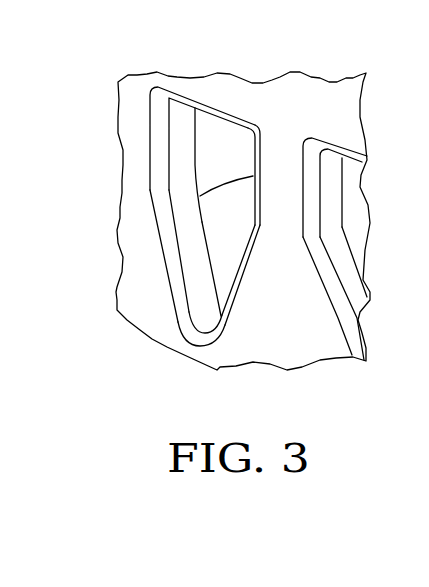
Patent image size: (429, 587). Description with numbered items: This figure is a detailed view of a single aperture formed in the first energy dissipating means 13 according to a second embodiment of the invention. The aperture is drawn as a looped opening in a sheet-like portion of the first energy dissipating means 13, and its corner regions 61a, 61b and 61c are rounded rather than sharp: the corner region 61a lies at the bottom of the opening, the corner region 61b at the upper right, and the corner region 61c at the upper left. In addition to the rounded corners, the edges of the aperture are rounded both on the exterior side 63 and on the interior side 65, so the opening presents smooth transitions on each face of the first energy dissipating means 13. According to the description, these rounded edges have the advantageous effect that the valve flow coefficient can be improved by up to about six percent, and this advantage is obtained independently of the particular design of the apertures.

The first energy dissipating means 13 is at (290, 333).
The corner region 61a is at (211, 334).
The corner region 61b is at (253, 147).
The corner region 61c is at (158, 112).
The exterior side 63 is at (165, 225).
The interior side 65 is at (204, 176).